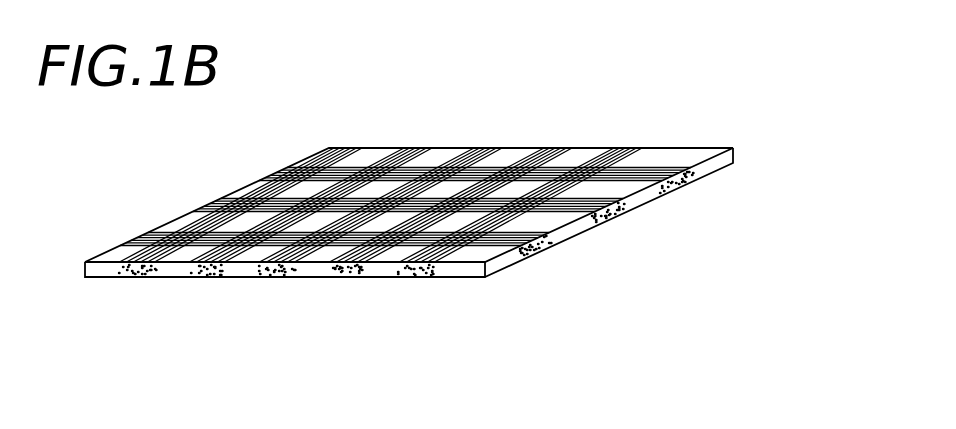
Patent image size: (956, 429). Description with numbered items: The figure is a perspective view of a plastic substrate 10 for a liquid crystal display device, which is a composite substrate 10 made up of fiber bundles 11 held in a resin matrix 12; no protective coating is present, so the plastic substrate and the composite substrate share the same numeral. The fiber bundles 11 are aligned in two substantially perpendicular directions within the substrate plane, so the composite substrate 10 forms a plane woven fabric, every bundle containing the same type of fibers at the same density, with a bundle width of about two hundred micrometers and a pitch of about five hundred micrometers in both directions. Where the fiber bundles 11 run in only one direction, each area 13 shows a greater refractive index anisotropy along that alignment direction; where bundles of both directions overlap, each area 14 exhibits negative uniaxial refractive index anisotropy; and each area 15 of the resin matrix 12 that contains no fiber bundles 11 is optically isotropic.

The plastic substrate 10 is at (762, 111).
The fiber bundles 11 is at (543, 245).
The resin matrix 12 is at (715, 165).
The area 13 is at (478, 250).
The area 14 is at (252, 247).
The area 15 is at (463, 192).